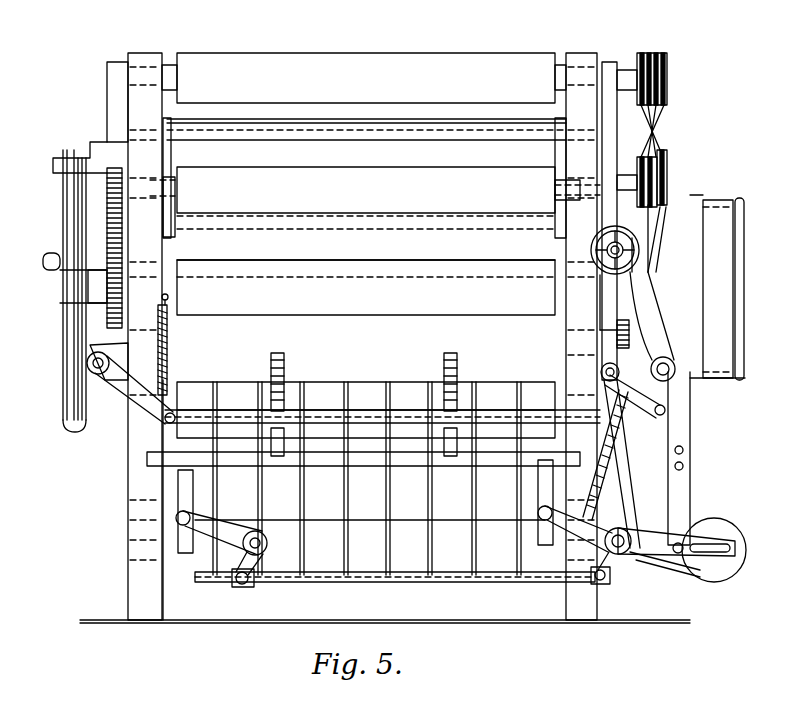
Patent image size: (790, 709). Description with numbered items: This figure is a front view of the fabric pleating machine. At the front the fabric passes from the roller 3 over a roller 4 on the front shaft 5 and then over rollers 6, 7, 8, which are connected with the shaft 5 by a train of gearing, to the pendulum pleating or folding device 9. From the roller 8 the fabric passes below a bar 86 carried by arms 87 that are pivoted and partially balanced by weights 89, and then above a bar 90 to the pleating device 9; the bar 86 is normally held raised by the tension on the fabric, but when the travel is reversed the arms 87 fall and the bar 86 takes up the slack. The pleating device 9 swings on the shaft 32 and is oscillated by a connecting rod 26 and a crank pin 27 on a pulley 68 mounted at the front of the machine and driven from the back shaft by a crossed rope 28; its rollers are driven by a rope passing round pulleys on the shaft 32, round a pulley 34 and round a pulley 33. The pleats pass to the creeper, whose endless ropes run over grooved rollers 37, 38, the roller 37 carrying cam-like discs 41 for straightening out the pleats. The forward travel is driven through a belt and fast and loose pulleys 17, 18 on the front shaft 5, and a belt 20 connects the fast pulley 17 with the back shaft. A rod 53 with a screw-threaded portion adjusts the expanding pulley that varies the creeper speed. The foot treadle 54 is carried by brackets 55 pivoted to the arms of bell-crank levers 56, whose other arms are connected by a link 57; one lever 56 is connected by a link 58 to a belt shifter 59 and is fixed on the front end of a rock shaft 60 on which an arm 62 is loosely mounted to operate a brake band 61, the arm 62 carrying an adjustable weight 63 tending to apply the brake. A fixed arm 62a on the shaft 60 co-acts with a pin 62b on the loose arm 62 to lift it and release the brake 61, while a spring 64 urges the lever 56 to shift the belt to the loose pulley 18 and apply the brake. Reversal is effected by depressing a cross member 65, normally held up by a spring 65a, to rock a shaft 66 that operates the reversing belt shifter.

The roller 3 is at (340, 53).
The roller 4 is at (340, 315).
The front shaft 5 is at (167, 302).
The roller 6 is at (240, 229).
The roller 7 is at (405, 260).
The roller 8 is at (340, 167).
The pendulum pleating or folding device 9 is at (112, 102).
The fast pulley 17 is at (700, 378).
The loose pulley 18 is at (645, 330).
The belt 20 is at (739, 380).
The connecting rod 26 is at (63, 186).
The crank pin 27 is at (52, 270).
The crossed rope 28 is at (80, 428).
The shaft 32 is at (626, 70).
The pulley 33 is at (637, 165).
The pulley 34 is at (667, 158).
The roller 37 is at (232, 382).
The roller 38 is at (318, 520).
The cam-like discs 41 is at (284, 360).
The rod 53 is at (623, 246).
The foot treadle 54 is at (147, 460).
The brackets 55 is at (178, 491).
The bell-crank levers 56 is at (212, 555).
The link 57 is at (402, 582).
The link 58 is at (672, 468).
The belt shifter 59 is at (655, 280).
The rock shaft 60 is at (609, 583).
The brake band 61 is at (690, 440).
The arm 62 is at (715, 545).
The fixed arm 62a is at (650, 568).
The pin 62b is at (678, 556).
The adjustable weight 63 is at (708, 582).
The spring 64 is at (622, 510).
The cross member 65 is at (362, 410).
The spring 65a is at (167, 358).
The shaft 66 is at (100, 375).
The pulley 68 is at (68, 355).
The bar 86 is at (402, 123).
The arms 87 is at (171, 156).
The weights 89 is at (172, 218).
The bar 90 is at (366, 147).